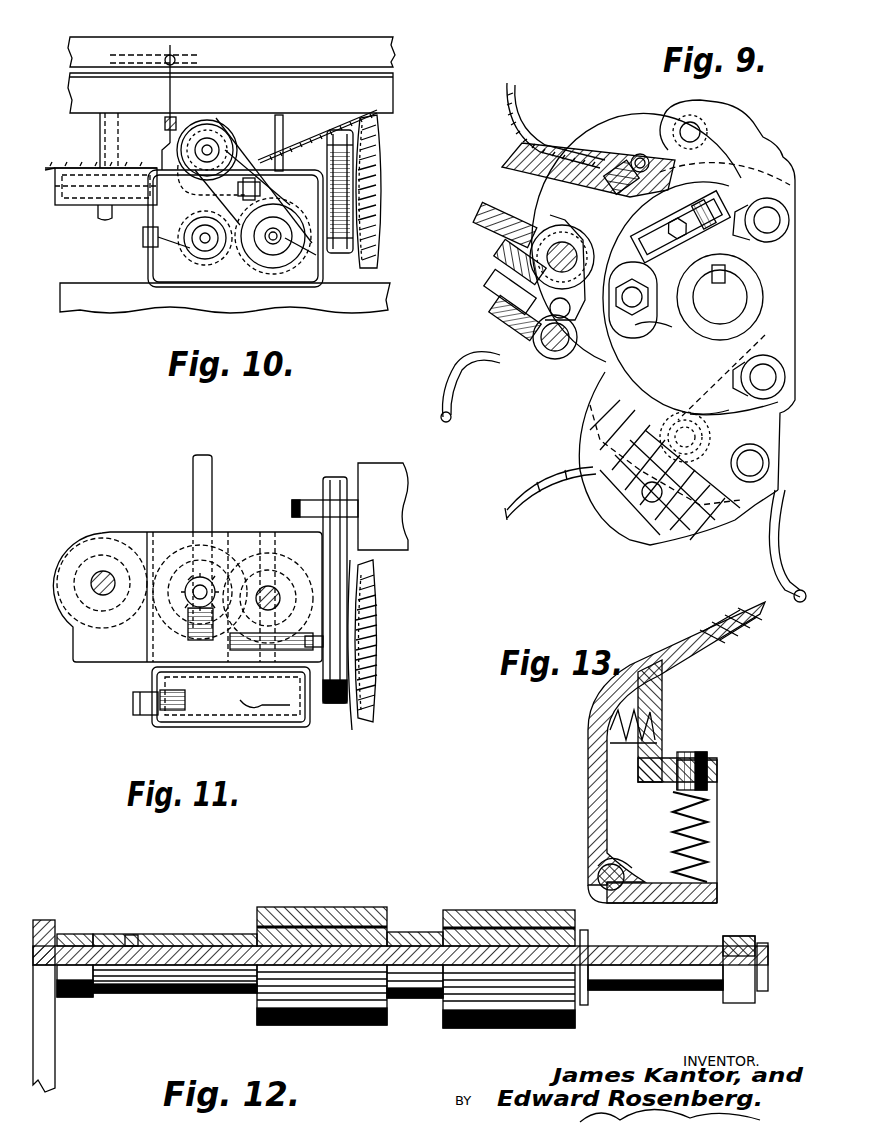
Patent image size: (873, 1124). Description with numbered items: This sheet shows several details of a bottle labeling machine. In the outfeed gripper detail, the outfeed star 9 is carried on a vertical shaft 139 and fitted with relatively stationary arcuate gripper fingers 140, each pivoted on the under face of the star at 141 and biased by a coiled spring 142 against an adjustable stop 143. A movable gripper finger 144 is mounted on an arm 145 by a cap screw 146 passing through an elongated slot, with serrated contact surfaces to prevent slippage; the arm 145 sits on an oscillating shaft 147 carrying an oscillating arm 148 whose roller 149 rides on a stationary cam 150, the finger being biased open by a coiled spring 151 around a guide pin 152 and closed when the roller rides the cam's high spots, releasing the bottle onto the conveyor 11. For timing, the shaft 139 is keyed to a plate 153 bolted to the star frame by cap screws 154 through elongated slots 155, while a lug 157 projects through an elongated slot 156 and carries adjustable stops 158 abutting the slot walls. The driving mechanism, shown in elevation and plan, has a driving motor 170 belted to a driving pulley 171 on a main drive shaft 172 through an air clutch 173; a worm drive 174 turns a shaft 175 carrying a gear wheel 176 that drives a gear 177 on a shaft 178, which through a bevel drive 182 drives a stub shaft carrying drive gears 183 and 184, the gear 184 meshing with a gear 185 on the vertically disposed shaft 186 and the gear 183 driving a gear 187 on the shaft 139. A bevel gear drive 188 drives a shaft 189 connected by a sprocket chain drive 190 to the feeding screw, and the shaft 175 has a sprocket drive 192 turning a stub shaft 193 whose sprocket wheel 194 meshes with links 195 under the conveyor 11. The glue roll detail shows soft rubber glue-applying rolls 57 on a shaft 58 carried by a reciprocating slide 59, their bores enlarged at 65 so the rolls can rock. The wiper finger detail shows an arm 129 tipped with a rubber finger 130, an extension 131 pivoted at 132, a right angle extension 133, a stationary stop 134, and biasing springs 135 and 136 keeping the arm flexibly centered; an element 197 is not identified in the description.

In FIG. 9, the outfeed star 9 is at (768, 423).
In FIG. 10, the conveyor 11 is at (58, 180).
In FIG. 12, the glue-applying rolls 57 is at (350, 908).
In FIG. 12, the shaft 58 is at (196, 946).
In FIG. 12, the reciprocating slide 59 is at (50, 920).
In FIG. 12, the enlarged bore ends 65 is at (253, 943).
In FIG. 13, the arm 129 is at (682, 644).
In FIG. 13, the rubber finger 130 is at (768, 612).
In FIG. 13, the extension 131 is at (588, 775).
In FIG. 13, the pivot 132 is at (604, 870).
In FIG. 13, the right angle extension 133 is at (692, 903).
In FIG. 13, the stationary stop 134 is at (665, 765).
In FIG. 13, the biasing spring 135 is at (655, 712).
In FIG. 13, the biasing spring 136 is at (700, 818).
In FIG. 11, the vertical shaft 139 is at (273, 588).
In FIG. 9, the vertical shaft 139 is at (735, 302).
In FIG. 9, the arcuate gripper finger 140 is at (518, 118).
In FIG. 9, the pivot 141 is at (640, 154).
In FIG. 9, the coiled spring 142 is at (620, 170).
In FIG. 9, the adjustable stop 143 is at (725, 166).
In FIG. 9, the movable gripper finger 144 is at (490, 345).
In FIG. 9, the arm 145 is at (495, 290).
In FIG. 9, the cap screw 146 is at (485, 318).
In FIG. 9, the oscillating shaft 147 is at (555, 352).
In FIG. 9, the oscillating arm 148 is at (600, 318).
In FIG. 9, the roller 149 is at (644, 300).
In FIG. 9, the cam 150 is at (710, 393).
In FIG. 9, the coiled spring 151 is at (492, 272).
In FIG. 9, the guide pin 152 is at (478, 232).
In FIG. 9, the plate 153 is at (745, 172).
In FIG. 9, the cap screws 154 is at (770, 218).
In FIG. 9, the elongated slots 155 is at (666, 336).
In FIG. 9, the elongated slot 156 is at (715, 222).
In FIG. 9, the lug 157 is at (704, 236).
In FIG. 9, the adjustable stops 158 is at (681, 227).
In FIG. 11, the driving motor 170 is at (380, 468).
In FIG. 11, the driving pulley 171 is at (359, 655).
In FIG. 10, the main drive shaft 172 is at (323, 175).
In FIG. 11, the main drive shaft 172 is at (318, 665).
In FIG. 10, the air clutch 173 is at (375, 150).
In FIG. 11, the air clutch 173 is at (374, 598).
In FIG. 10, the worm drive 174 is at (216, 194).
In FIG. 11, the worm drive 174 is at (280, 635).
In FIG. 10, the shaft 175 is at (276, 245).
In FIG. 11, the shaft 175 is at (258, 708).
In FIG. 10, the gear wheel 176 is at (253, 268).
In FIG. 11, the gear wheel 176 is at (205, 718).
In FIG. 10, the gear 177 is at (206, 250).
In FIG. 10, the shaft 178 is at (200, 247).
In FIG. 11, the shaft 178 is at (212, 471).
In FIG. 11, the bevel drive 182 is at (192, 590).
In FIG. 11, the drive gear 183 is at (220, 580).
In FIG. 11, the drive gear 184 is at (182, 545).
In FIG. 10, the gear 185 is at (111, 225).
In FIG. 11, the gear 185 is at (187, 585).
In FIG. 10, the vertically disposed shaft 186 is at (138, 144).
In FIG. 11, the vertically disposed shaft 186 is at (103, 572).
In FIG. 11, the gear 187 is at (262, 570).
In FIG. 10, the bevel gear drive 188 is at (185, 250).
In FIG. 11, the bevel gear drive 188 is at (168, 715).
In FIG. 10, the shaft 189 is at (143, 240).
In FIG. 11, the shaft 189 is at (135, 700).
In FIG. 10, the sprocket chain drive 190 is at (172, 99).
In FIG. 10, the sprocket drive 192 is at (290, 247).
In FIG. 11, the sprocket drive 192 is at (250, 708).
In FIG. 10, the stub shaft 193 is at (232, 142).
In FIG. 10, the sprocket wheel 194 is at (210, 148).
In FIG. 10, the links 195 is at (85, 172).
In FIG. 10, the hole 197 is at (173, 57).